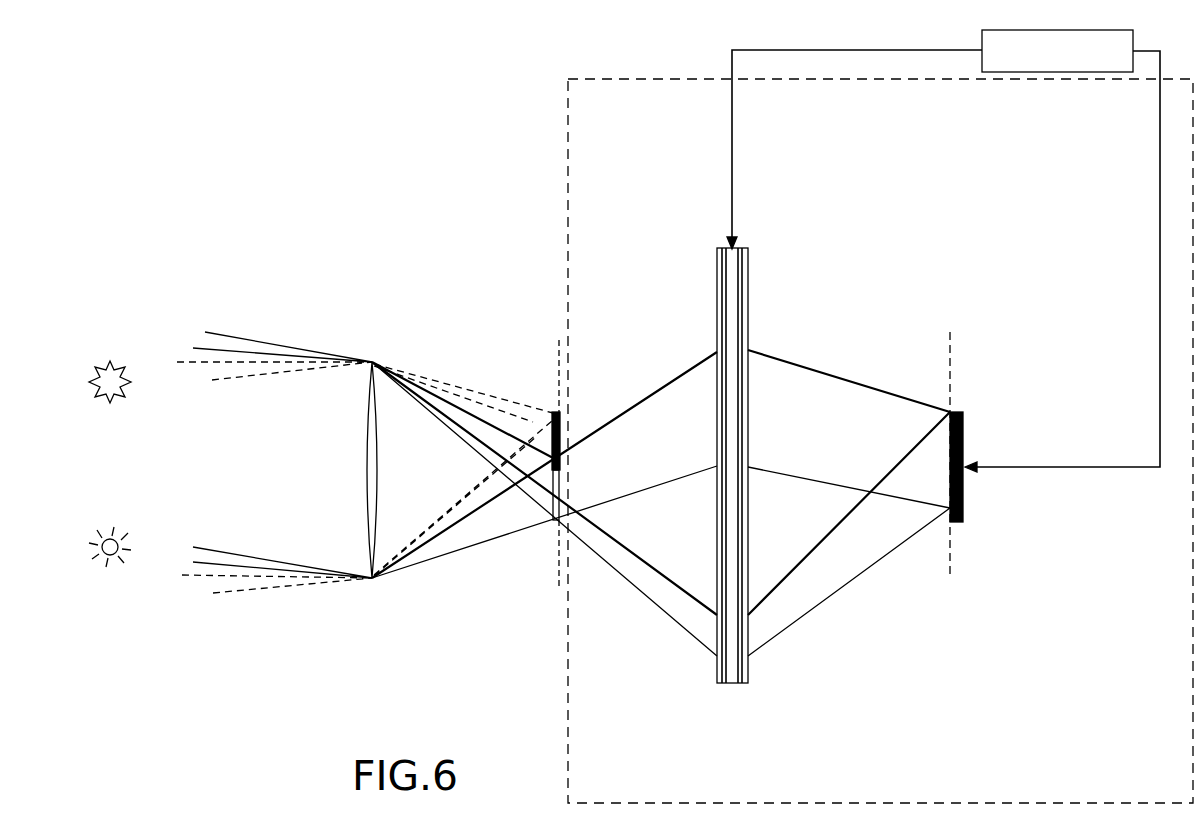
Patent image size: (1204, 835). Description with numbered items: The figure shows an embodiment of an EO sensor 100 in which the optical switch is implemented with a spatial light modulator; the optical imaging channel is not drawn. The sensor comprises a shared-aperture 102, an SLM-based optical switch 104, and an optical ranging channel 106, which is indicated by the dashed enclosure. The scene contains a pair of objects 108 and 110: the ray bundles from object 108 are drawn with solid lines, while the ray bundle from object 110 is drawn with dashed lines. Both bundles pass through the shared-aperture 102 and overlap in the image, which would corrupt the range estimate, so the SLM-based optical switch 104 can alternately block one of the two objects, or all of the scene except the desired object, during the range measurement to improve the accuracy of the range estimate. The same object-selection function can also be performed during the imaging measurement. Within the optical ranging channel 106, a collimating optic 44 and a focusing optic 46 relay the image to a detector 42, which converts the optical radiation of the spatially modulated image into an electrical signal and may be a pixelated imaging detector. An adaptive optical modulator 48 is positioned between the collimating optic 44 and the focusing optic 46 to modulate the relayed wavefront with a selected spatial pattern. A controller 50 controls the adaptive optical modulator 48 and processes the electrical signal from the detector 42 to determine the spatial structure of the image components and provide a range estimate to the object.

The EO sensor 100 is at (248, 160).
The shared-aperture 102 is at (370, 580).
The SLM-based optical switch 104 is at (551, 458).
The optical ranging channel 106 is at (568, 150).
The object 108 is at (110, 360).
The object 110 is at (118, 560).
The detector 42 is at (964, 417).
The collimating optic 44 is at (720, 278).
The focusing optic 46 is at (748, 278).
The adaptive optical modulator 48 is at (741, 248).
The controller 50 is at (1134, 40).